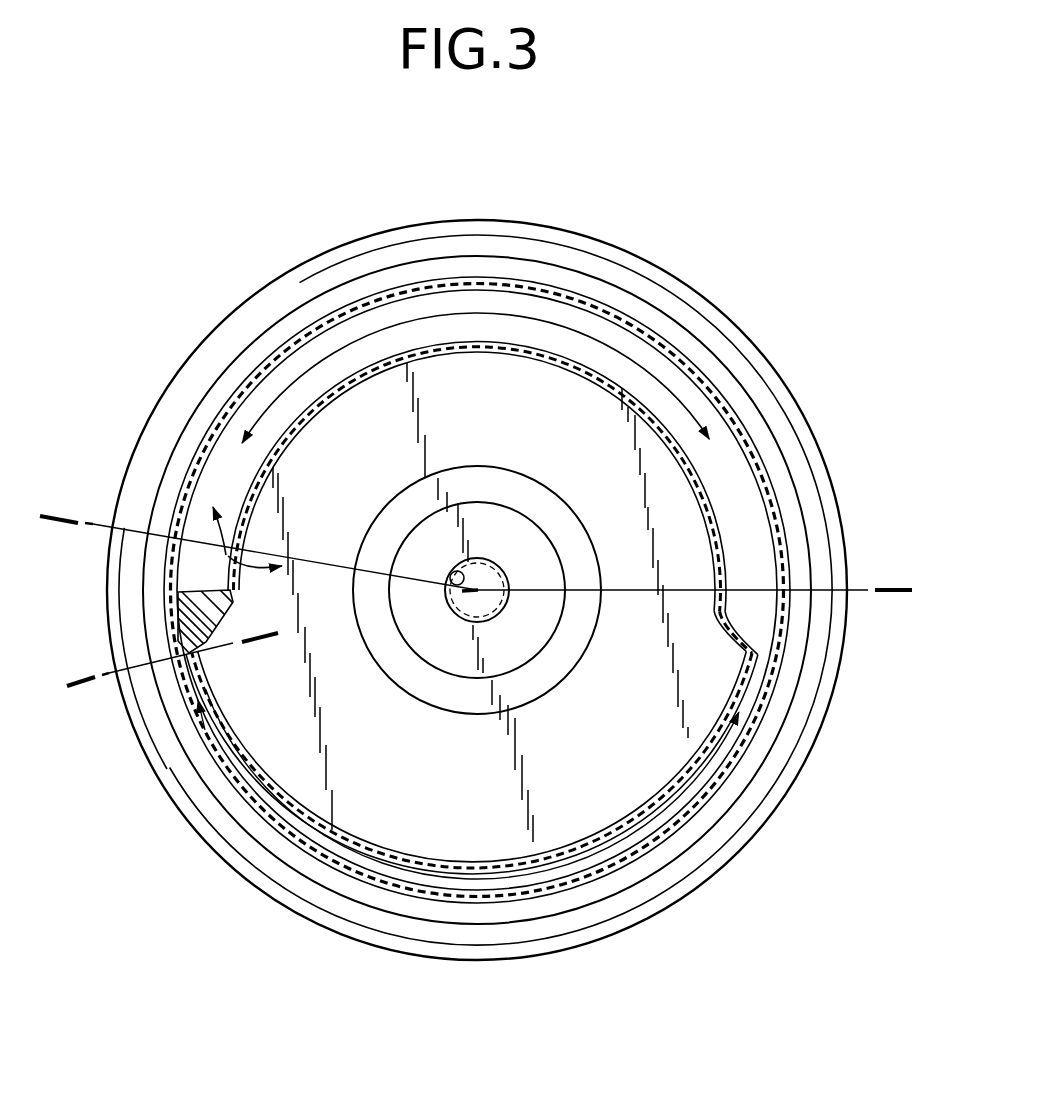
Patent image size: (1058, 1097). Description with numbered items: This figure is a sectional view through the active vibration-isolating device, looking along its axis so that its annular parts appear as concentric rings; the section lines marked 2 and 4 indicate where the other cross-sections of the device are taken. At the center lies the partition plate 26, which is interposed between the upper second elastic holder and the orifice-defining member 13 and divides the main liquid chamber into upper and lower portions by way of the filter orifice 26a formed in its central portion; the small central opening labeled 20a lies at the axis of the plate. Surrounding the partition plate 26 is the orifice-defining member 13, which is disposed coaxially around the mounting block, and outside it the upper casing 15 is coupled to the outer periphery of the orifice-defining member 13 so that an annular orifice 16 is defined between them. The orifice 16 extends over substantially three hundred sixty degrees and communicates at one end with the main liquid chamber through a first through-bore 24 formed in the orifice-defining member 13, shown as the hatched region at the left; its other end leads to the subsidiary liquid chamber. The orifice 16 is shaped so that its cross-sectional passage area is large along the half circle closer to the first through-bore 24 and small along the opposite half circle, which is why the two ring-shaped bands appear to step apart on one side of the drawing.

The upper casing 15 is at (745, 427).
The orifice-defining member 13 is at (716, 500).
The orifice 16 is at (767, 556).
The first through-bore 24 is at (229, 560).
The partition plate 26 is at (463, 786).
The filter orifice 26a is at (452, 578).
The center hole 20a is at (510, 570).
The section line 2- 2 is at (50, 526).
The section line 4- 4 is at (77, 690).